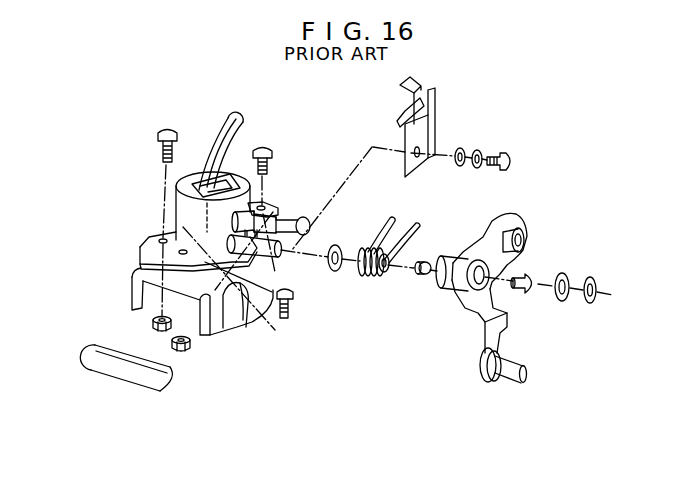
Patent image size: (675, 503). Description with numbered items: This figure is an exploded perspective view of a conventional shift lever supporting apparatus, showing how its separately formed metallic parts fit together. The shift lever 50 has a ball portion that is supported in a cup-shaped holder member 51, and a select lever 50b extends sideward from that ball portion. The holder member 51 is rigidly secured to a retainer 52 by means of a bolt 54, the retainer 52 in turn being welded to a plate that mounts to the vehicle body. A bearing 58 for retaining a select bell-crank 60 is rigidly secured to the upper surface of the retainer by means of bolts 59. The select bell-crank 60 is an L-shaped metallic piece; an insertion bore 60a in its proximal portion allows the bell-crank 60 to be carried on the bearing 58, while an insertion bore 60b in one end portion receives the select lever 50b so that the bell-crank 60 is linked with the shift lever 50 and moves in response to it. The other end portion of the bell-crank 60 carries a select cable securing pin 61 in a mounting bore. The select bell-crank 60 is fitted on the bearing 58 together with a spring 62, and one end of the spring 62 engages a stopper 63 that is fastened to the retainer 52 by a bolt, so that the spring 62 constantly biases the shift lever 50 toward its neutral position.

The shift lever 50 is at (227, 119).
The select lever 50b is at (288, 218).
The holder member 51 is at (190, 176).
The retainer 52 is at (130, 292).
The bolt 54 is at (263, 146).
The bearing 58 is at (142, 244).
The bolts 59 is at (161, 130).
The select bell-crank 60 is at (516, 216).
The insertion bore 60a is at (477, 311).
The insertion bore 60b is at (524, 239).
The select cable securing pin 61 is at (507, 383).
The spring 62 is at (373, 282).
The stopper 63 is at (437, 103).